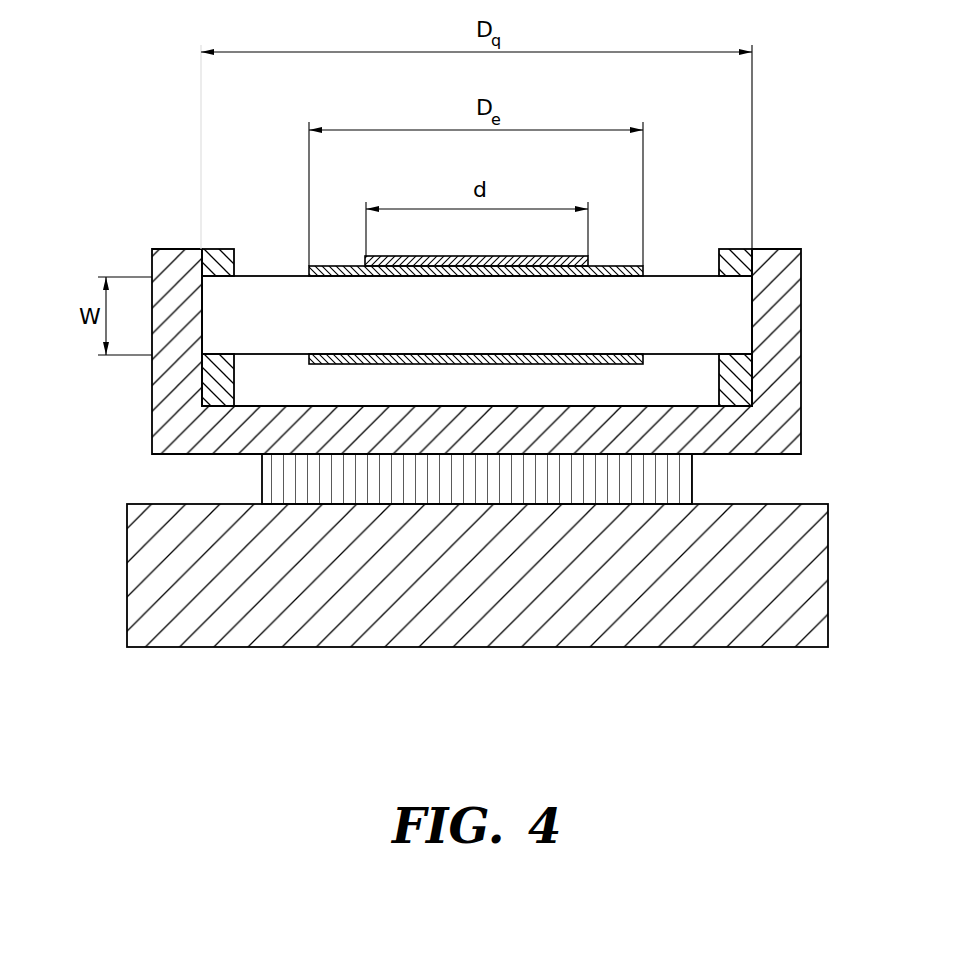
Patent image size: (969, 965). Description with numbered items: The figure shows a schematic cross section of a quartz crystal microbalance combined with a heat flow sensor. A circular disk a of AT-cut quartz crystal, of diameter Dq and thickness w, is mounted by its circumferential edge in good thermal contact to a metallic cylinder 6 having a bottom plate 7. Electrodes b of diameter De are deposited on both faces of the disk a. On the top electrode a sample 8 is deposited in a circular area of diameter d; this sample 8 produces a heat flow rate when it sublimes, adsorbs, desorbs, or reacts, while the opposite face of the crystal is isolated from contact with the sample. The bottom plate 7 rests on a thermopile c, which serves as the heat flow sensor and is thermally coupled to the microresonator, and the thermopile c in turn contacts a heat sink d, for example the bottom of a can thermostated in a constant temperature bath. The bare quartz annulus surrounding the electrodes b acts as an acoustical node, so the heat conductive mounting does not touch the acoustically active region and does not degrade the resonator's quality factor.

The metallic cylinder 6 is at (177, 419).
The bottom plate 7 is at (780, 455).
The sample 8 is at (490, 257).
The circular disk a is at (388, 311).
The electrodes b is at (416, 373).
The thermopile c is at (248, 478).
The heat sink d is at (246, 665).